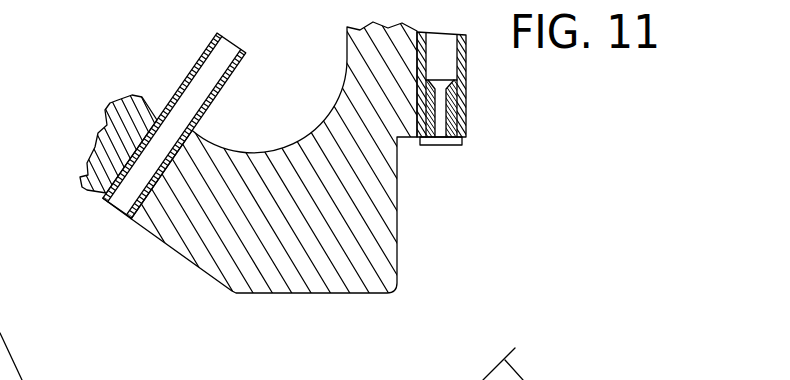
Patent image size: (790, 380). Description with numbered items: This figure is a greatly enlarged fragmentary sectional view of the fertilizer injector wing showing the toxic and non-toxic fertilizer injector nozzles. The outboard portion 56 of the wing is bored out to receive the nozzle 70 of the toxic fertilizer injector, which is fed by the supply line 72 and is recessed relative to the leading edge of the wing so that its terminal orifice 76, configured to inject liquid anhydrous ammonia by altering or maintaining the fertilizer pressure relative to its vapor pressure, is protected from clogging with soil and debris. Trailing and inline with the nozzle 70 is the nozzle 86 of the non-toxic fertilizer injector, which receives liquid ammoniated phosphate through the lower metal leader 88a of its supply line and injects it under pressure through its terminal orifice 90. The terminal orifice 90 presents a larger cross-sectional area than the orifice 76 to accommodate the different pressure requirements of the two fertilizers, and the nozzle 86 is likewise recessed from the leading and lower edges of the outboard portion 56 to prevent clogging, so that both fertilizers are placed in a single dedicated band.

The outboard portion 56 is at (294, 278).
The supply line 72 is at (199, 60).
The nozzle 70 is at (119, 209).
The terminal orifice 76 is at (109, 216).
The lower metal leader 88a is at (467, 120).
The nozzle 86 is at (452, 146).
The terminal orifice 90 is at (441, 157).